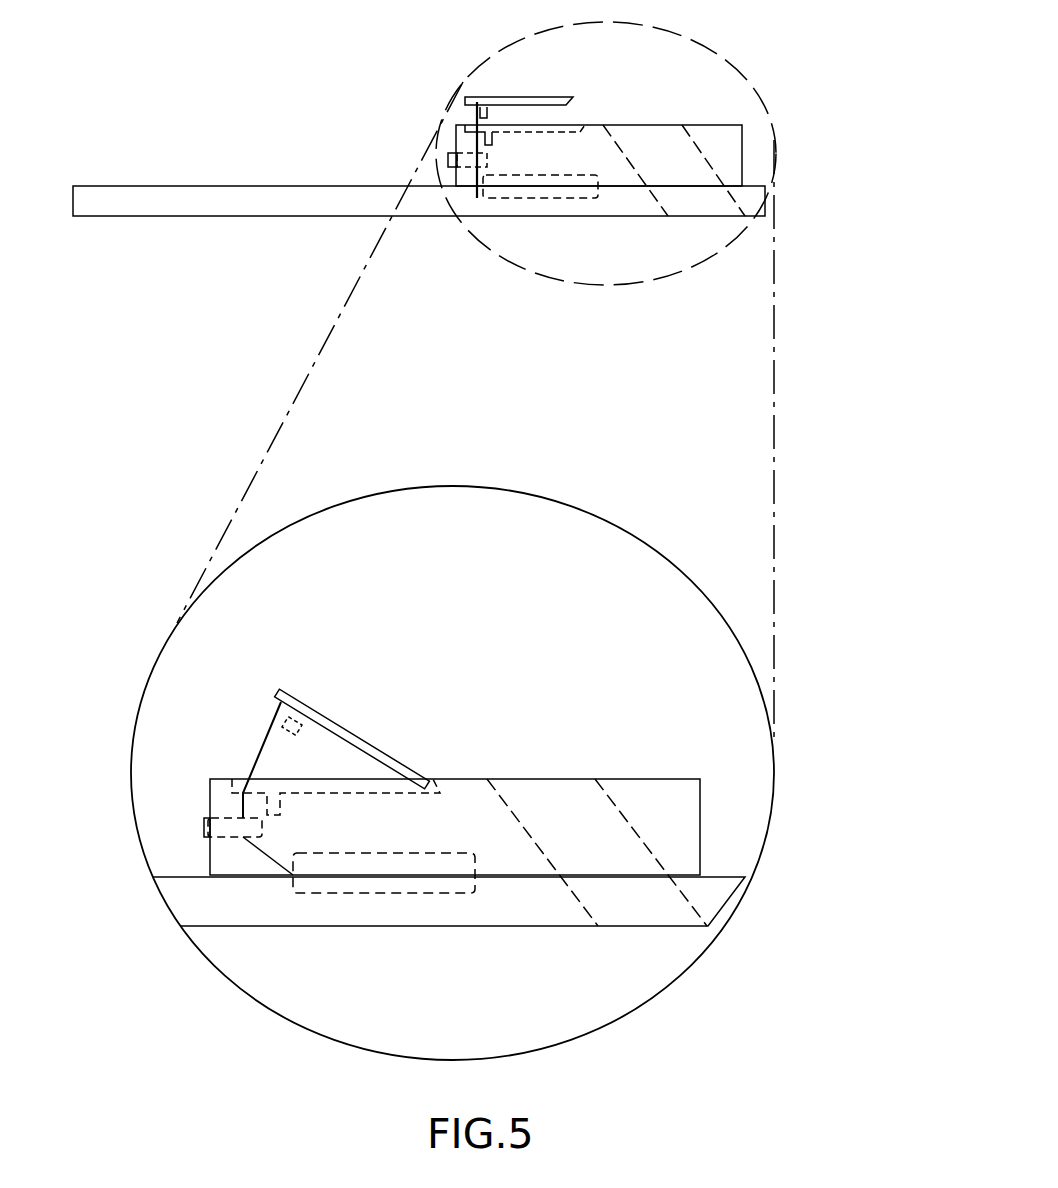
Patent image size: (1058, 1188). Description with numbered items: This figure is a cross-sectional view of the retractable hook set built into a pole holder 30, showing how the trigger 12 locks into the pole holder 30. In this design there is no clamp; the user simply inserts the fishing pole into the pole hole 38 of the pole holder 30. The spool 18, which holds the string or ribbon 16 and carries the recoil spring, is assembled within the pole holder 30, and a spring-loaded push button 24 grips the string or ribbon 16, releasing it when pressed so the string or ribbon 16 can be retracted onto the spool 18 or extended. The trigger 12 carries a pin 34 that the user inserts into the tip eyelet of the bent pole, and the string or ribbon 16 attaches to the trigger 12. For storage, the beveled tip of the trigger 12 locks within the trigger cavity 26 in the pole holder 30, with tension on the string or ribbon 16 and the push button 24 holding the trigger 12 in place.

The trigger 12 is at (590, 91).
The string or ribbon 16 is at (457, 113).
The spool 18 is at (559, 210).
The push button 24 is at (429, 160).
The trigger cavity 26 is at (576, 118).
The pole holder 30 is at (315, 232).
The pin 34 is at (295, 735).
The pole hole 38 is at (684, 163).